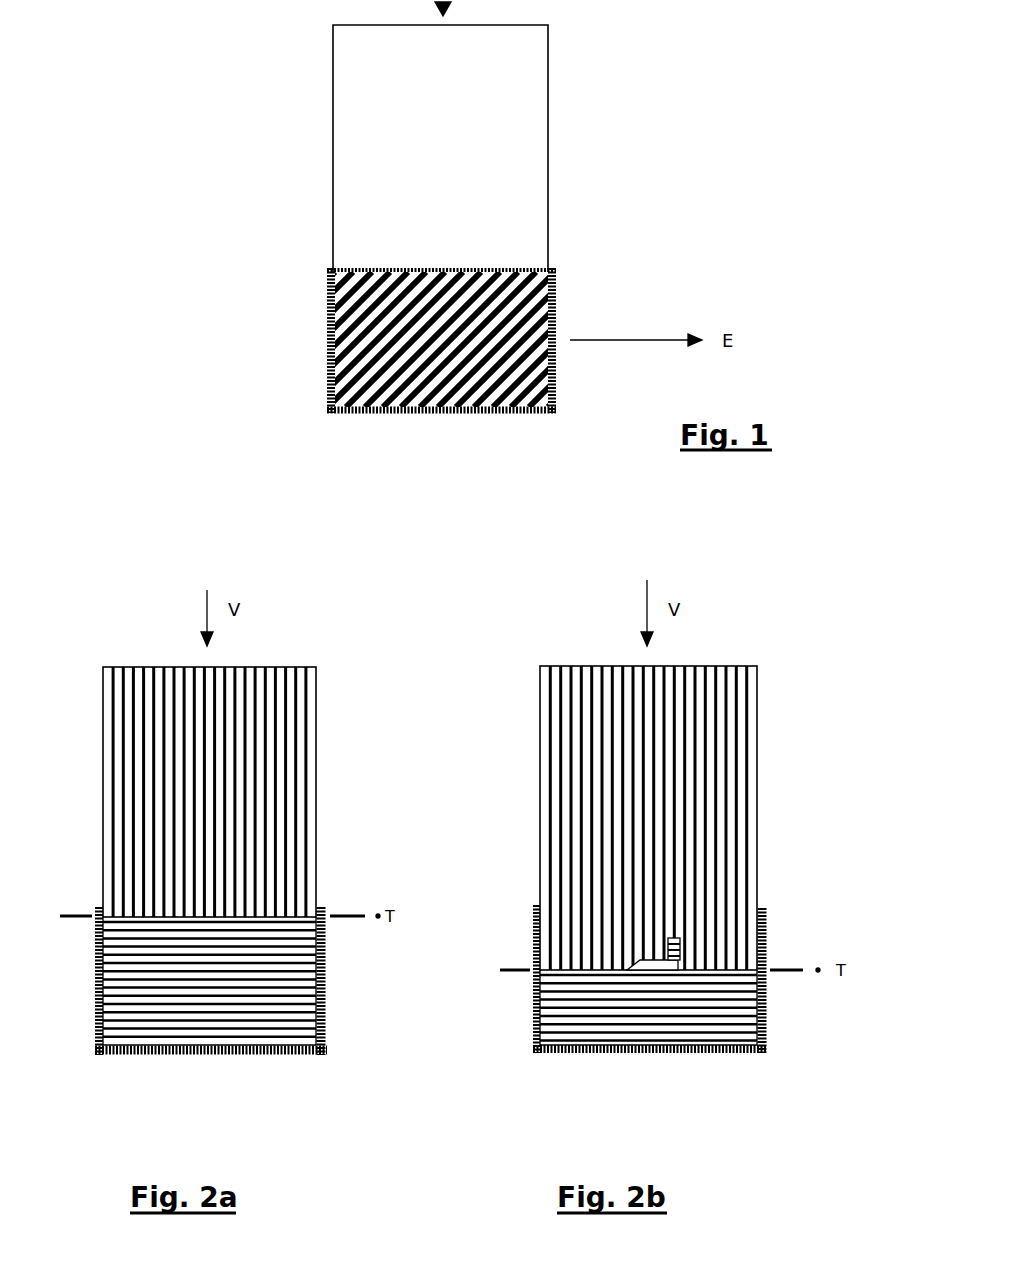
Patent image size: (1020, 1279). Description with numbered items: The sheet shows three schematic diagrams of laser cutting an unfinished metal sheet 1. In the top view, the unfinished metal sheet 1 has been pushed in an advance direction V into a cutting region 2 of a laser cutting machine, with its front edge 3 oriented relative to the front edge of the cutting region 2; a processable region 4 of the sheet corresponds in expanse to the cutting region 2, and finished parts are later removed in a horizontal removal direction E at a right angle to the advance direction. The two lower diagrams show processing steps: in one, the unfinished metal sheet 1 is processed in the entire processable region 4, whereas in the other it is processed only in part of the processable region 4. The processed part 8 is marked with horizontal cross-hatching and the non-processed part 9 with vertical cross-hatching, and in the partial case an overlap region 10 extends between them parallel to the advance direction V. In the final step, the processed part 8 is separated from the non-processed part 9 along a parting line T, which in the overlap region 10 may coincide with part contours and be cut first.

In FIG. 1, the unfinished metal sheet 1 is at (325, 134).
In FIG. 2A, the unfinished metal sheet 1 is at (330, 740).
In FIG. 2B, the unfinished metal sheet 1 is at (528, 740).
In FIG. 1, the cutting region 2 is at (558, 298).
In FIG. 2A, the cutting region 2 is at (210, 981).
In FIG. 2B, the cutting region 2 is at (770, 918).
In FIG. 1, the front edge 3 is at (392, 420).
In FIG. 2A, the front edge 3 is at (275, 1062).
In FIG. 2B, the front edge 3 is at (563, 1062).
In FIG. 1, the processable region 4 is at (455, 342).
In FIG. 2A, the processed part 8 is at (271, 981).
In FIG. 2B, the processed part 8 is at (592, 1007).
In FIG. 2A, the non-processed part 9 is at (276, 792).
In FIG. 2B, the non-processed part 9 is at (587, 818).
In FIG. 2B, the overlap region 10 is at (676, 982).